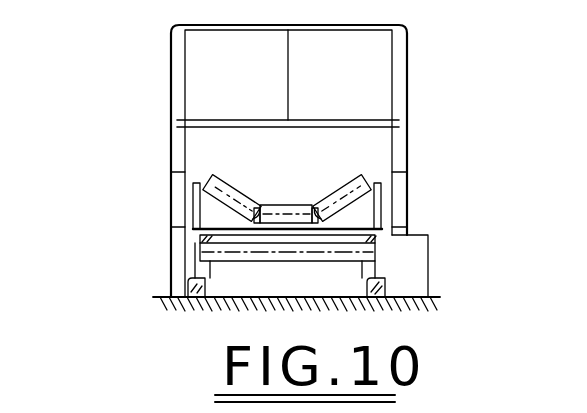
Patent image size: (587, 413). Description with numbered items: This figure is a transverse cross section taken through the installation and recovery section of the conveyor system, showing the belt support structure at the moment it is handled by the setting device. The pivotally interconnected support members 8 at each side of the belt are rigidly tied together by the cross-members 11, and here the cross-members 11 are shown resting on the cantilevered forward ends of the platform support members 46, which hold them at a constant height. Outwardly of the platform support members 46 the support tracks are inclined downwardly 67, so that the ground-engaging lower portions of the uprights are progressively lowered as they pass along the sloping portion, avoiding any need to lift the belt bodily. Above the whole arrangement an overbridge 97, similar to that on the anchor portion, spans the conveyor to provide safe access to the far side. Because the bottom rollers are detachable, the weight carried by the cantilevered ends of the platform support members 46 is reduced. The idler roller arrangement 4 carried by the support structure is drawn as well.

The overbridge 97 is at (177, 78).
The idler roller set 4 is at (208, 178).
The cross-member 11 is at (200, 222).
The support member 8 is at (195, 240).
The platform support member 46 is at (200, 245).
The downwardly inclined portion of track 67 is at (190, 290).